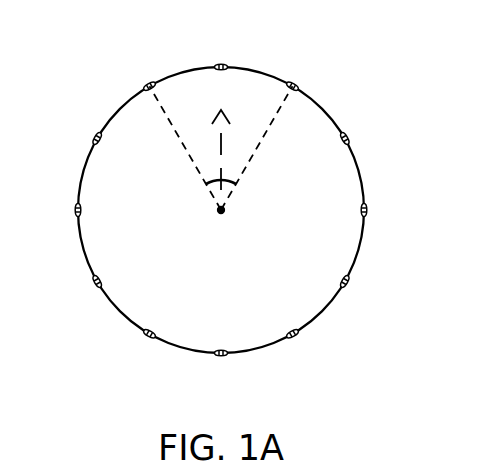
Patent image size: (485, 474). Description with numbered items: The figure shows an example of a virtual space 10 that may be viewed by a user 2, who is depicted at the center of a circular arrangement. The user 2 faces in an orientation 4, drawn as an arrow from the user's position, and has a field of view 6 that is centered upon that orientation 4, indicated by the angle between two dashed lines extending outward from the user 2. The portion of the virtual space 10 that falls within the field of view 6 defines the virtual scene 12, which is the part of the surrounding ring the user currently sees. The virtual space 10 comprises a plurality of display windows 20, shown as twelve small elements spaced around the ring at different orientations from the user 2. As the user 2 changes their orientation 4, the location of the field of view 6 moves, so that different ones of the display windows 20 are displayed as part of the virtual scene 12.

The user 2 is at (223, 211).
The orientation 4 is at (220, 146).
The field of view 6 is at (205, 187).
The virtual space 10 is at (240, 288).
The virtual scene 12 is at (247, 82).
The display windows 20 is at (221, 64).